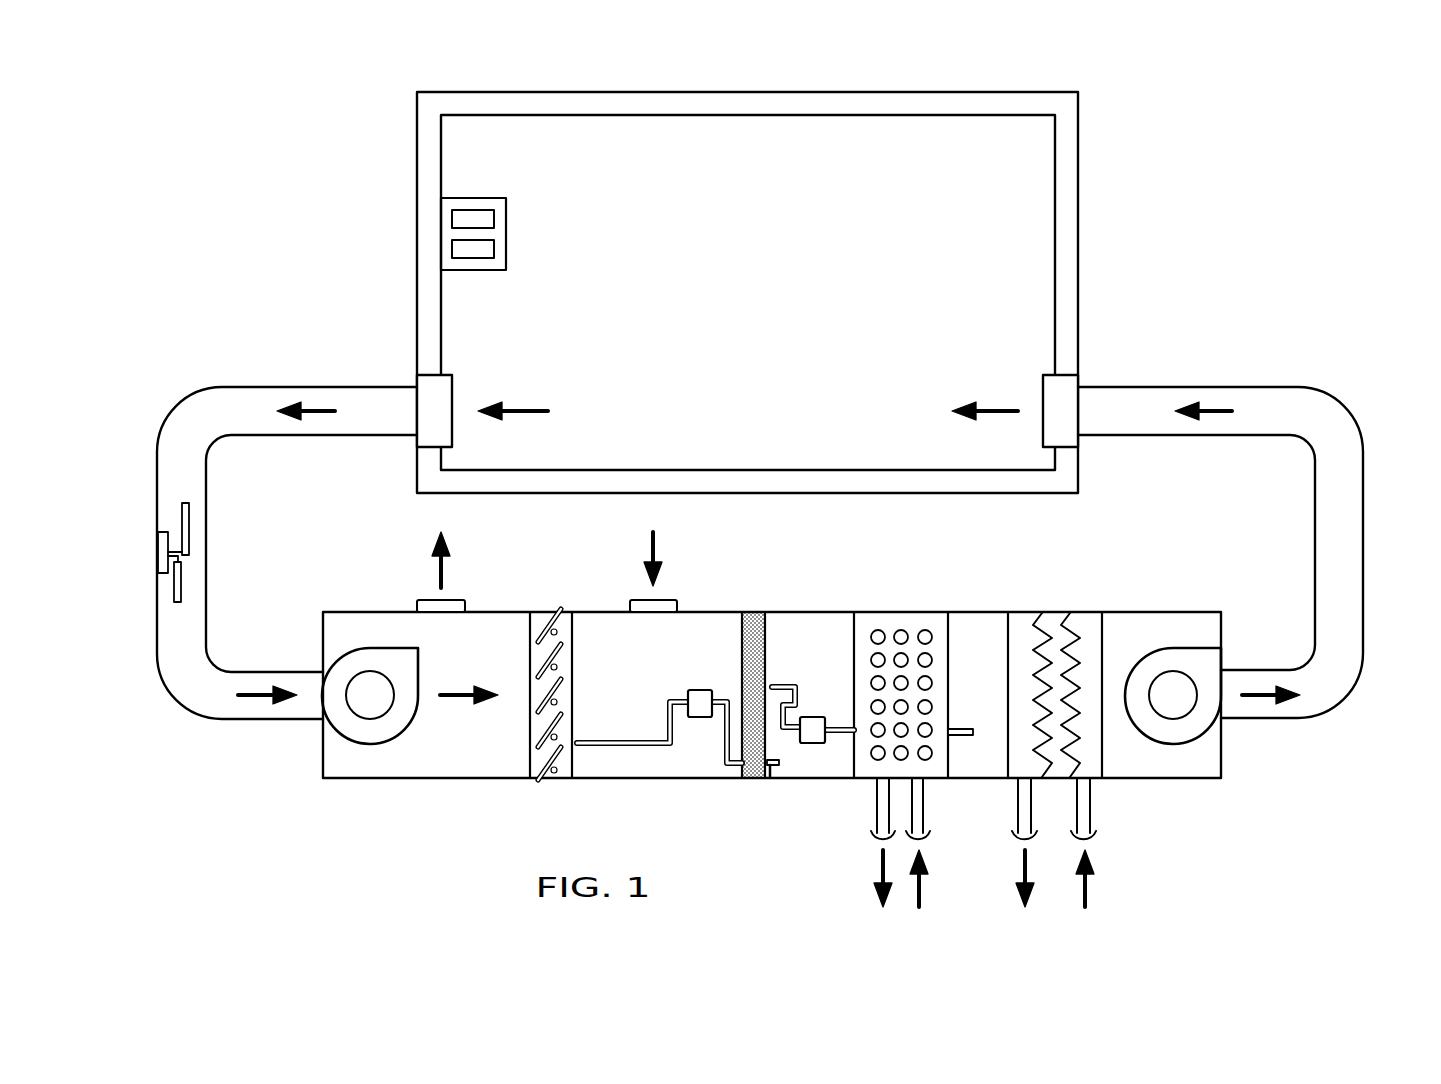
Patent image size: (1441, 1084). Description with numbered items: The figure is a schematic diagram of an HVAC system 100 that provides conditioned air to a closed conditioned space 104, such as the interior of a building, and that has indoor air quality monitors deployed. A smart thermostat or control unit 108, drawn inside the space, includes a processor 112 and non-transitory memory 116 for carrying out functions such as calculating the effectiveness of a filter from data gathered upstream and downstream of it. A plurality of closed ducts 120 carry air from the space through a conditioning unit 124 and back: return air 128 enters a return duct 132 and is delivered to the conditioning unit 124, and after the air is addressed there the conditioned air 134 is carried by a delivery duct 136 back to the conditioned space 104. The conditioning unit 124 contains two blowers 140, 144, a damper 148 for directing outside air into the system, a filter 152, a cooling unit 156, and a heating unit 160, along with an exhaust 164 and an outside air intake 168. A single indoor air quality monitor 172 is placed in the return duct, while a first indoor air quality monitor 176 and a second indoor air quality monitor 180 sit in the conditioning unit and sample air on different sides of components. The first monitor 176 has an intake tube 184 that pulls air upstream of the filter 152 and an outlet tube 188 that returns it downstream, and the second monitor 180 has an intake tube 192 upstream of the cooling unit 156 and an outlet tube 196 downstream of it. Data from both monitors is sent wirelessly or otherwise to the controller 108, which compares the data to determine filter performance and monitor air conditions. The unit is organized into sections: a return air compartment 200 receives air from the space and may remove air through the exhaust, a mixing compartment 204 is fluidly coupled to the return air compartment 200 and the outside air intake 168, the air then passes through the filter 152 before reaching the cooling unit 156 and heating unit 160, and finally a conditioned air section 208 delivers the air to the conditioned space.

The HVAC system 100 is at (1173, 217).
The conditioned space 104 is at (726, 303).
The control unit 108 is at (508, 232).
The processor 112 is at (473, 262).
The non-transitory memory 116 is at (473, 209).
The closed ducts 120 is at (275, 366).
The conditioning unit 124 is at (378, 778).
The return air 128 is at (527, 410).
The return duct 132 is at (156, 470).
The conditioned air 134 is at (995, 409).
The delivery duct 136 is at (1365, 553).
The blower 140 is at (413, 721).
The blower 144 is at (1182, 746).
The damper 148 is at (538, 653).
The filter 152 is at (753, 611).
The cooling unit 156 is at (903, 620).
The heating unit 160 is at (1057, 620).
The exhaust 164 is at (415, 603).
The outside air intake 168 is at (628, 603).
The indoor air quality monitor 172 is at (157, 553).
The first indoor air quality monitor 176 is at (698, 690).
The second indoor air quality monitor 180 is at (810, 717).
The intake tube 184 is at (630, 737).
The outlet tube 188 is at (775, 780).
The intake tube 192 is at (780, 688).
The outlet tube 196 is at (965, 720).
The return air compartment 200 is at (452, 768).
The mixing compartment 204 is at (652, 768).
The conditioned air section 208 is at (1140, 768).